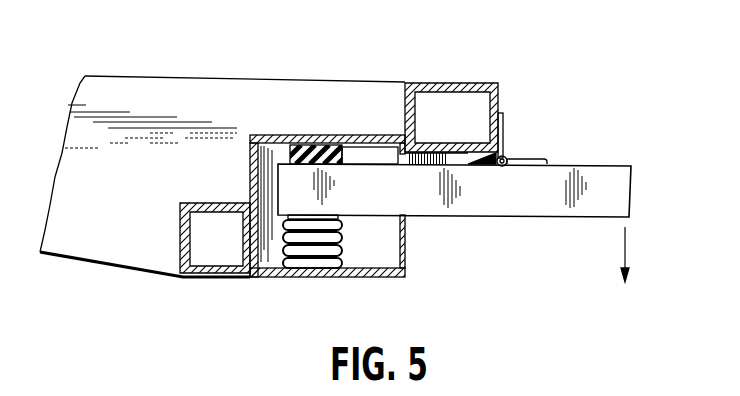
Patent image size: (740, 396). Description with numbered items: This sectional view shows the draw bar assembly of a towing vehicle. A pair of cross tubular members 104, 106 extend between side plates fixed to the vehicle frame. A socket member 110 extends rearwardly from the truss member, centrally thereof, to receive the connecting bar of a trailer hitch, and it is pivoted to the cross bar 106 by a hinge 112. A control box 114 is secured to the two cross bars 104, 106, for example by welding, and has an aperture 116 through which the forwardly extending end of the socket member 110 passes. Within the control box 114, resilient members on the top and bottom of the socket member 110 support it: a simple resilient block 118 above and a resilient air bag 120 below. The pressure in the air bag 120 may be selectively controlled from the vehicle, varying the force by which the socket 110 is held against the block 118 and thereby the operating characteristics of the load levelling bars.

The cross tubular member 104 is at (186, 222).
The cross tubular member 106 is at (499, 92).
The socket member 110 is at (532, 205).
The hinge 112 is at (508, 158).
The control box 114 is at (253, 170).
The aperture 116 is at (409, 223).
The resilient block 118 is at (330, 152).
The resilient air bag 120 is at (340, 244).